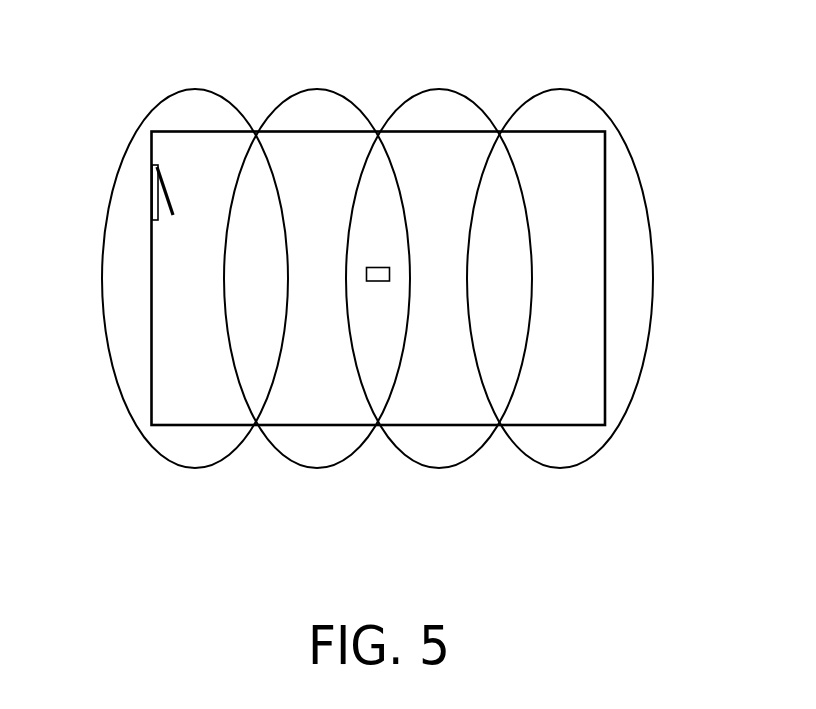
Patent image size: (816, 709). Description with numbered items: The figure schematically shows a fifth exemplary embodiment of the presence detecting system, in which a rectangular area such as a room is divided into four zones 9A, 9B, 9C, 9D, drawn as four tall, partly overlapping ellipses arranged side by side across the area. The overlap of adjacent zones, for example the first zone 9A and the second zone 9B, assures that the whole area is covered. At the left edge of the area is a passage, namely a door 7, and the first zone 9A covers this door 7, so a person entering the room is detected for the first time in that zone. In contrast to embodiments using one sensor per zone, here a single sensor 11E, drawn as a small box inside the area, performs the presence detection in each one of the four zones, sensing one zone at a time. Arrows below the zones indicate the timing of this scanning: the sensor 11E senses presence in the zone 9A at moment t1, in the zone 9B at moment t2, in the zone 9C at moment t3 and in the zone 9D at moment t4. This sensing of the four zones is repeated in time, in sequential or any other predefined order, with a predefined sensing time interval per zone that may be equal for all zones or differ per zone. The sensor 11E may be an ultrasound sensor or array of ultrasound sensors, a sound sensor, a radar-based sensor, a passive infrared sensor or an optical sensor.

The first zone 9A is at (192, 115).
The second zone 9B is at (313, 115).
The third zone 9C is at (443, 115).
The fourth zone 9D is at (567, 115).
The door 7 is at (155, 202).
The sensor 11E is at (378, 266).
The moment t1 is at (183, 468).
The moment t2 is at (315, 468).
The moment t3 is at (440, 468).
The moment t4 is at (572, 468).